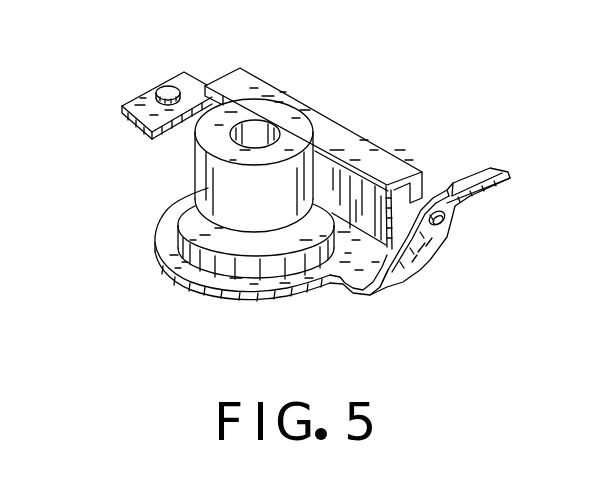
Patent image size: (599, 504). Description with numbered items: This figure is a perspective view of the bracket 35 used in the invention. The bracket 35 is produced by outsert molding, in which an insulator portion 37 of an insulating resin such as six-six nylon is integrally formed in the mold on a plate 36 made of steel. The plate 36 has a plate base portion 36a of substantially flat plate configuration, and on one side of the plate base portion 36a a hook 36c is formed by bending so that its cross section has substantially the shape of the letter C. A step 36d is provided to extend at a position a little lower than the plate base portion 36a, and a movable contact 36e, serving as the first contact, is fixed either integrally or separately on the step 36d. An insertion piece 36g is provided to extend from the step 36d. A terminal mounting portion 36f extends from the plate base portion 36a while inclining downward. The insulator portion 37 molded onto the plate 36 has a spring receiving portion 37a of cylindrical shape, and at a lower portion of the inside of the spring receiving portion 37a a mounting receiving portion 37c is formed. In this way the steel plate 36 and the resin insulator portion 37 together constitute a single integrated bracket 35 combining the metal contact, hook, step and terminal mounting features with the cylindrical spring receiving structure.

The bracket 35 is at (383, 97).
The plate 36 is at (347, 267).
The plate base portion 36a is at (292, 278).
The hook 36c is at (380, 165).
The step 36d is at (142, 108).
The movable contact 36e is at (164, 89).
The terminal mounting portion 36f is at (427, 235).
The insertion piece 36g is at (137, 123).
The insulator portion 37 is at (212, 170).
The spring receiving portion 37a is at (237, 203).
The mounting receiving portion 37c is at (265, 136).